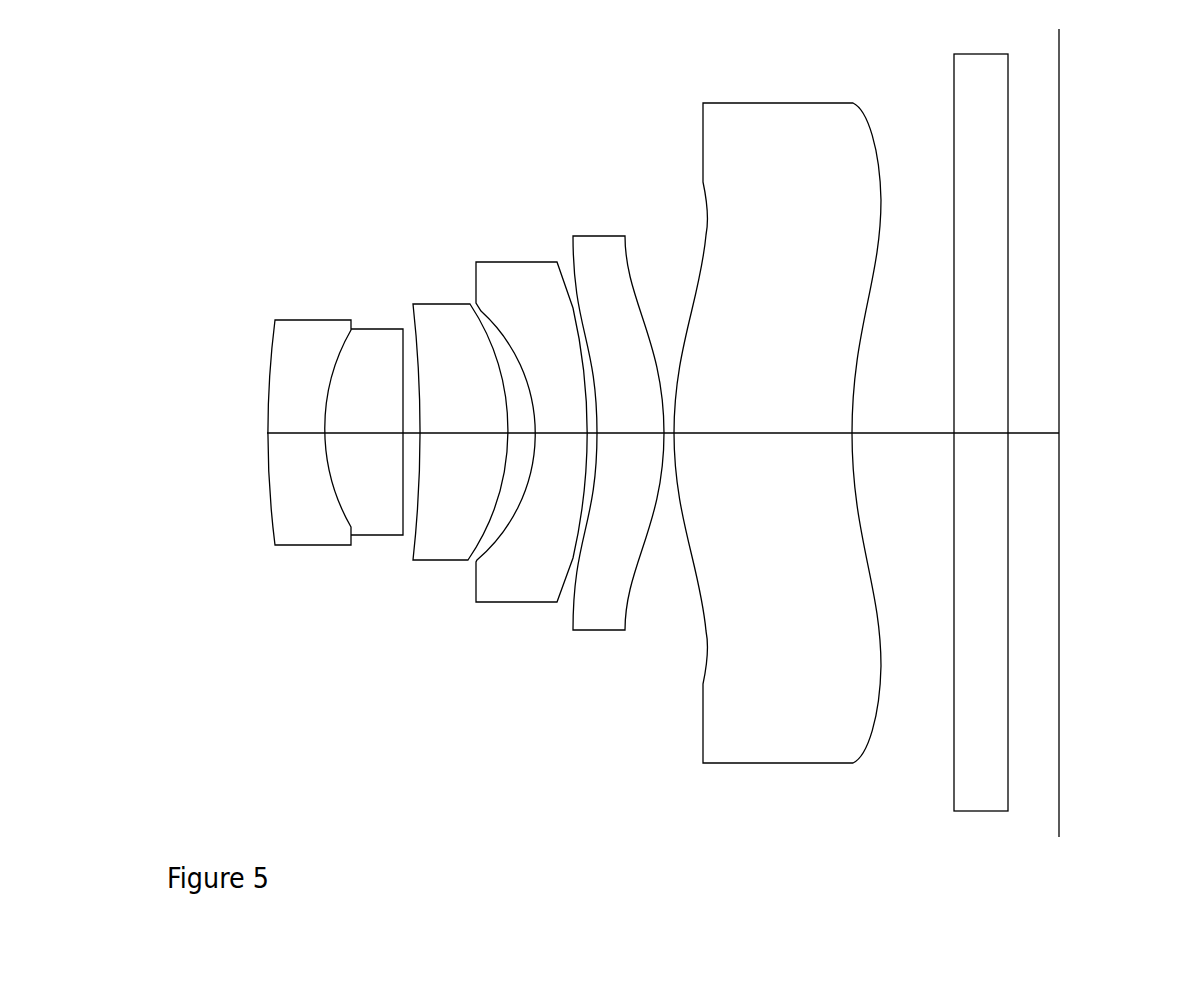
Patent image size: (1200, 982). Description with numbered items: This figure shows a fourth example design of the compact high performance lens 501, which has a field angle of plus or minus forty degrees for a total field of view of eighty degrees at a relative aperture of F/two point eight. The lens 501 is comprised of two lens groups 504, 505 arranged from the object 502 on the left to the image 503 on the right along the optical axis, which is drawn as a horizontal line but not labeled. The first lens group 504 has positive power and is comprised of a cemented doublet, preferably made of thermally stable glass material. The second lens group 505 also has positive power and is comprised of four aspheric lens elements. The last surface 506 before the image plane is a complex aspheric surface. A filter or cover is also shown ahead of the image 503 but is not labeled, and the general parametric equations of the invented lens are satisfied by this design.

The lens 501 is at (560, 895).
The object 502 is at (221, 501).
The image 503 is at (1074, 519).
The first lens group 504 is at (346, 348).
The second lens group 505 is at (822, 256).
The last surface 506 is at (919, 349).